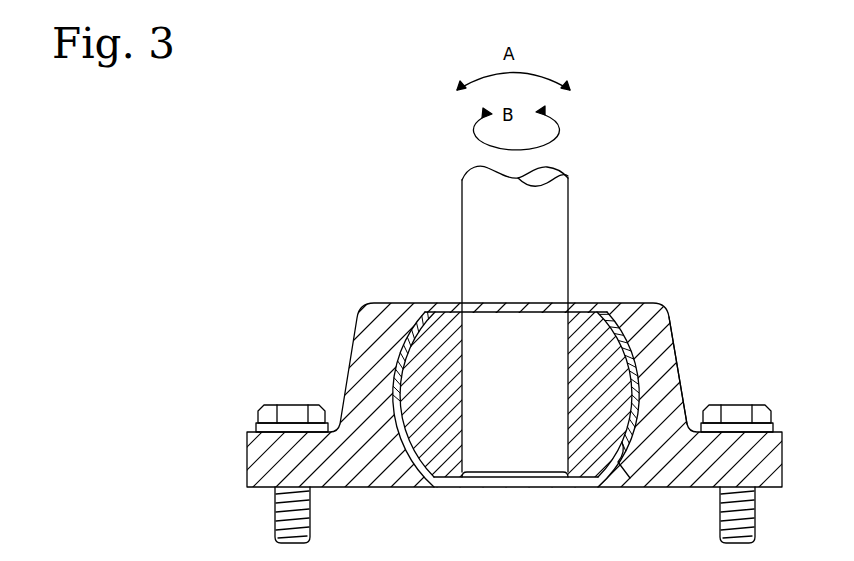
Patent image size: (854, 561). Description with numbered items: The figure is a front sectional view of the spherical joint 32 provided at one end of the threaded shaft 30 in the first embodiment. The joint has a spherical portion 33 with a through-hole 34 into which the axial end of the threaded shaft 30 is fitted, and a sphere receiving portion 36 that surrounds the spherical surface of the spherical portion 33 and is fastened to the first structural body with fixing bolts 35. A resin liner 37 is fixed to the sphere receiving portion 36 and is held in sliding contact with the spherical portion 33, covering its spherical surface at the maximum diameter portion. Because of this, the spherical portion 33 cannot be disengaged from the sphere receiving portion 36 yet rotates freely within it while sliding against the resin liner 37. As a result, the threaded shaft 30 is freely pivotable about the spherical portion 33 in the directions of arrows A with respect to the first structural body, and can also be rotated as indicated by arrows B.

The threaded shaft 30 is at (568, 203).
The spherical joint 32 is at (678, 296).
The spherical portion 33 is at (423, 380).
The through-hole 34 is at (568, 442).
The fixing bolts 35 is at (287, 415).
The sphere receiving portion 36 is at (680, 362).
The resin liner 37 is at (622, 444).